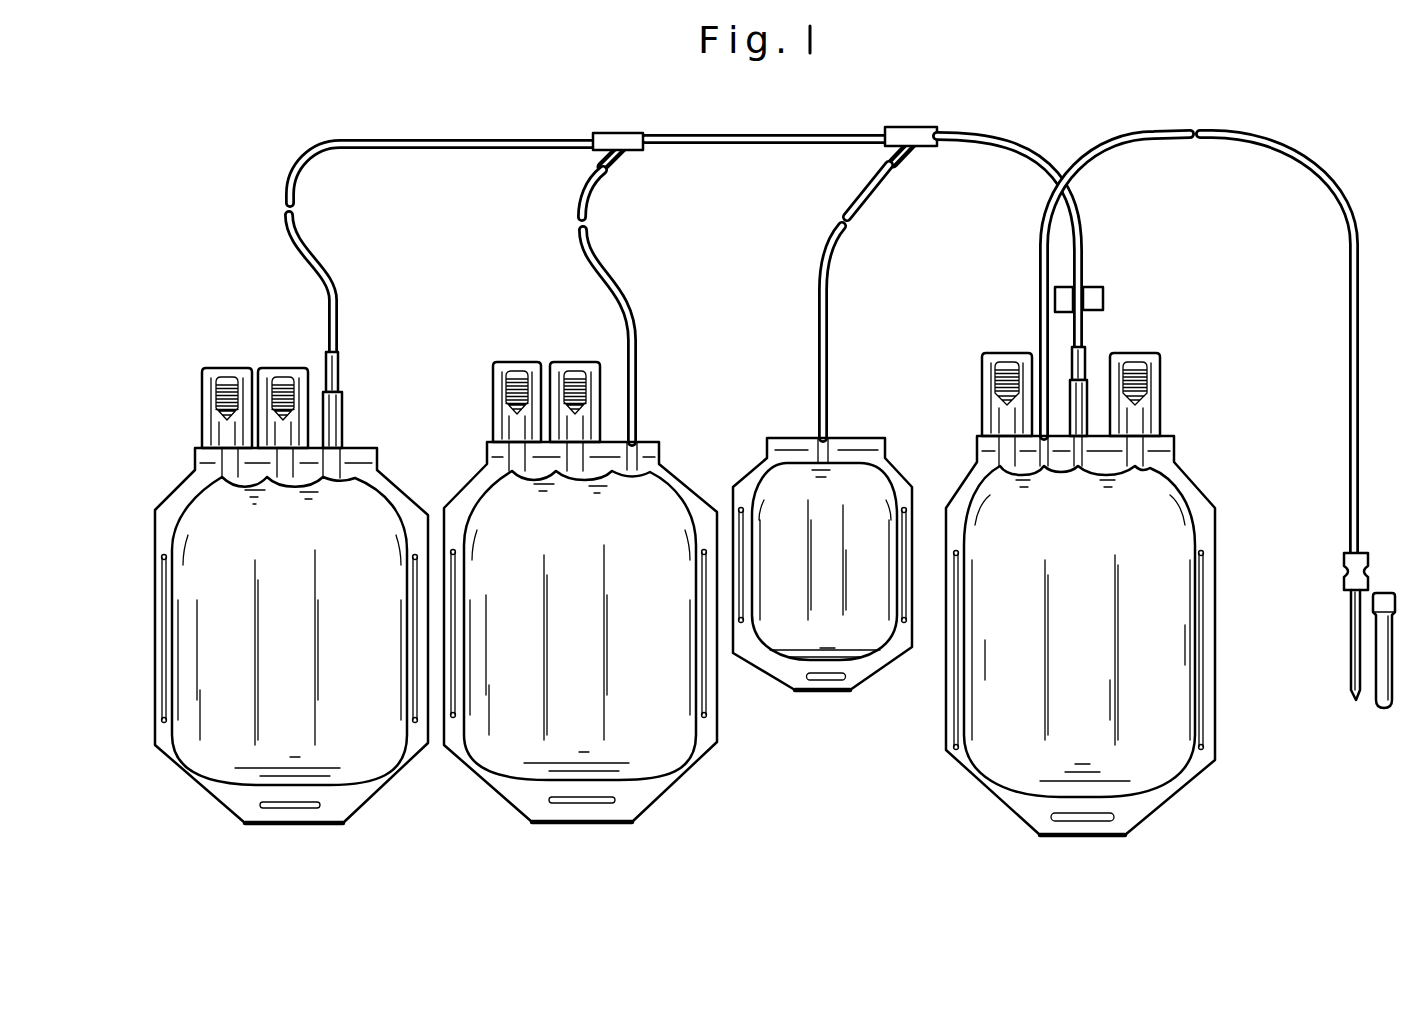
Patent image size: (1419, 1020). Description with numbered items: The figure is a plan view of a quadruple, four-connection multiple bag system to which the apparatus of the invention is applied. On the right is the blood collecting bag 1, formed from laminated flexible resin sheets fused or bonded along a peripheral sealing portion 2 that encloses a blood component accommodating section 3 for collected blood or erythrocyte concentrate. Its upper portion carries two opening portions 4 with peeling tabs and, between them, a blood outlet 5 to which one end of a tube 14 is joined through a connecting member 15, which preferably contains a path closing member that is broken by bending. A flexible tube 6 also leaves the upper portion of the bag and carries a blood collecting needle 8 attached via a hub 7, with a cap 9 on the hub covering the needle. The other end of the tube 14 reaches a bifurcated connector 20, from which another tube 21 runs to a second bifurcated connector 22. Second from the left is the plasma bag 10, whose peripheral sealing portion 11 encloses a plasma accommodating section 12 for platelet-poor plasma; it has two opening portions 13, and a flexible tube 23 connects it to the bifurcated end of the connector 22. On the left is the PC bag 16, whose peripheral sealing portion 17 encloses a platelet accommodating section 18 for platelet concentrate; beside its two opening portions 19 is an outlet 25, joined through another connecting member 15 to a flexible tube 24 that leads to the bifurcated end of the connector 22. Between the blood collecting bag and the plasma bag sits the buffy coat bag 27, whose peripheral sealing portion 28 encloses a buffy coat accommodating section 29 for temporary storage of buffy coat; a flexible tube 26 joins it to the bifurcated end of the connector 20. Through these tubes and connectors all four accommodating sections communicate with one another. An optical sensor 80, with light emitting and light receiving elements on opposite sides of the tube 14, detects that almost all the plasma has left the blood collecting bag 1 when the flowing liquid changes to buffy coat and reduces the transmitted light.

The blood collecting bag 1 is at (1084, 848).
The peripheral sealing portion 2 is at (1130, 814).
The blood component accommodating section 3 is at (1175, 782).
The opening portions 4 is at (1006, 365).
The blood outlet 5 is at (1088, 398).
The flexible tube 6 is at (1364, 347).
The hub 7 is at (1370, 560).
The blood collecting needle 8 is at (1352, 680).
The cap 9 is at (1390, 706).
The plasma bag 10 is at (650, 827).
The peripheral sealing portion 11 is at (541, 822).
The plasma accommodating section 12 is at (520, 750).
The opening portions 13 is at (578, 364).
The tube 14 is at (1038, 152).
The connecting member 15 is at (340, 358).
The PC bag 16 is at (324, 838).
The peripheral sealing portion 17 is at (200, 792).
The platelet accommodating section 18 is at (256, 768).
The opening portions 19 is at (278, 368).
The bifurcated connector 20 is at (923, 127).
The tube 21 is at (693, 150).
The bifurcated connector 22 is at (619, 131).
The flexible tube 23 is at (638, 318).
The flexible tube 24 is at (390, 142).
The outlet 25 is at (346, 398).
The flexible tube 26 is at (832, 330).
The buffy coat bag 27 is at (824, 702).
The peripheral sealing portion 28 is at (893, 660).
The buffy coat accommodating section 29 is at (853, 652).
The optical sensor 80 is at (1062, 288).